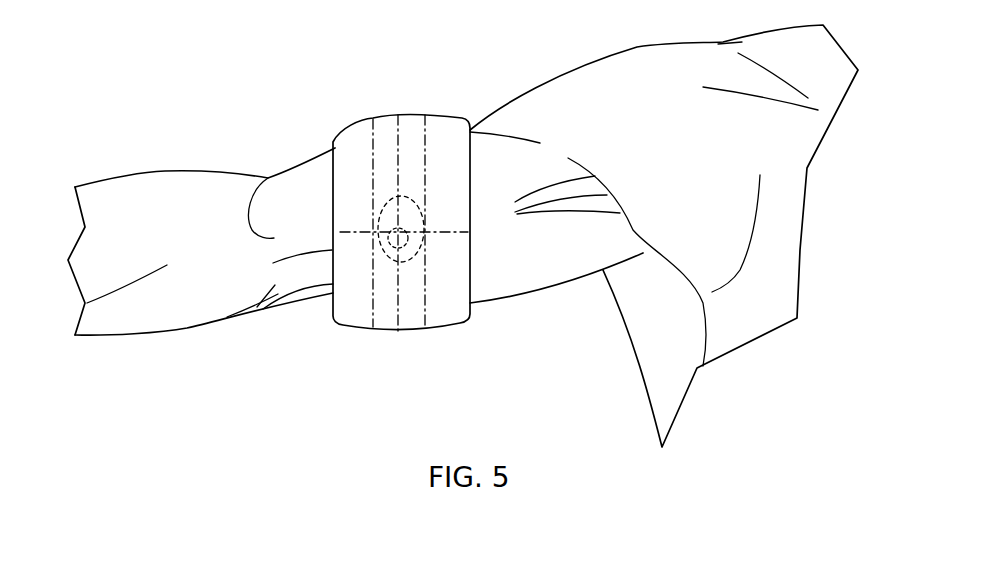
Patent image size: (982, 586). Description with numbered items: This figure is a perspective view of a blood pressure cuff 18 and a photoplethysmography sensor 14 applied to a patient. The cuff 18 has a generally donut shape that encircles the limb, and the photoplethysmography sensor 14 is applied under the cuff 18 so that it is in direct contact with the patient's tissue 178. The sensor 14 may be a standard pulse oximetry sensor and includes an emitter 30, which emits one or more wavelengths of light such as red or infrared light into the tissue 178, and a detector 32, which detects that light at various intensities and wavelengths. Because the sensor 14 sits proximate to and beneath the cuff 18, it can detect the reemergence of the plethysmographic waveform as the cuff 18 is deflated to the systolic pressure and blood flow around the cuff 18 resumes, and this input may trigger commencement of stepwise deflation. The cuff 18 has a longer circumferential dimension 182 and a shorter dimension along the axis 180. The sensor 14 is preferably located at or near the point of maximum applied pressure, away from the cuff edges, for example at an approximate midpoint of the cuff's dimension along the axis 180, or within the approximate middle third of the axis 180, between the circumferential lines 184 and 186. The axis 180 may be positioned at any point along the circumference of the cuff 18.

The photoplethysmography sensor 14 is at (380, 207).
The cuff 18 is at (422, 113).
The emitter 30 is at (405, 213).
The detector 32 is at (405, 245).
The patient's tissue 178 is at (300, 162).
The axis 180 is at (330, 268).
The circumferential dimension 182 is at (397, 320).
The circumferential line 184 is at (373, 307).
The circumferential line 186 is at (427, 321).